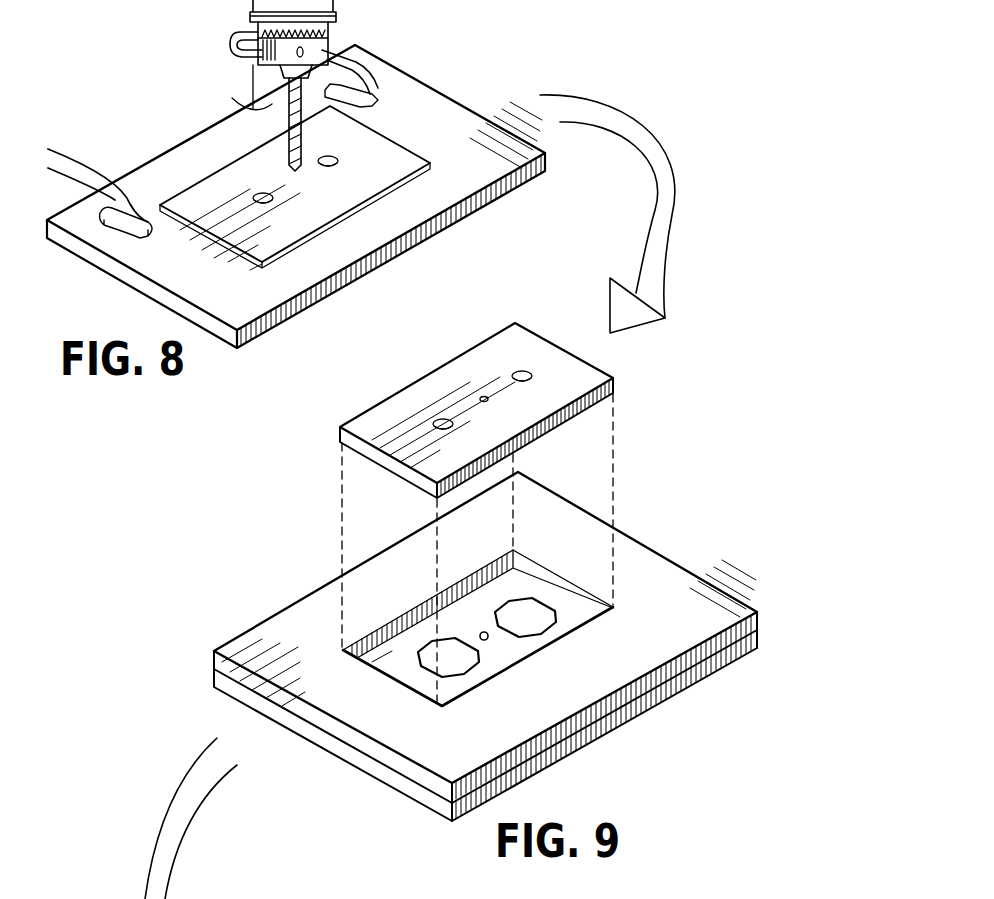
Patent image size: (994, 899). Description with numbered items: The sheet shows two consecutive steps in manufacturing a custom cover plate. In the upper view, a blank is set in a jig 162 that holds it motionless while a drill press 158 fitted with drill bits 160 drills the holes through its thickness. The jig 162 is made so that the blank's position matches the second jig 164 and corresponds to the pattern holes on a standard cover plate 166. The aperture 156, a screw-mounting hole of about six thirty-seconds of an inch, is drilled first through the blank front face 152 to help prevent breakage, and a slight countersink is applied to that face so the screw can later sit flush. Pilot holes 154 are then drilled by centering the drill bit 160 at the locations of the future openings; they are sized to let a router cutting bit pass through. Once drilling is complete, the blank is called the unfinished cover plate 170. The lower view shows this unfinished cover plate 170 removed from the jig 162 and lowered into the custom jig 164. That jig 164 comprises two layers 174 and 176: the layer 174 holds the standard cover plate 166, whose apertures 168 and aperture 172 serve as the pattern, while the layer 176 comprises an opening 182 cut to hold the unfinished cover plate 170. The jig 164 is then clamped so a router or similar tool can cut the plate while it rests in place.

In FIG. 8, the blank front face 152 is at (190, 203).
In FIG. 9, the blank front face 152 is at (530, 342).
In FIG. 8, the pilot holes 154 is at (258, 193).
In FIG. 9, the pilot holes 154 is at (522, 370).
In FIG. 9, the aperture 156 is at (482, 396).
In FIG. 8, the drill press 158 is at (250, 20).
In FIG. 8, the drill bits 160 is at (243, 103).
In FIG. 8, the jig 162 is at (125, 304).
In FIG. 9, the jig 164 is at (446, 646).
In FIG. 9, the standard cover plate 166 is at (572, 614).
In FIG. 9, the apertures 168 is at (482, 658).
In FIG. 9, the unfinished cover plate 170 is at (322, 449).
In FIG. 9, the aperture 172 is at (484, 631).
In FIG. 9, the layer 174 is at (210, 680).
In FIG. 9, the layer 176 is at (210, 651).
In FIG. 9, the opening 182 is at (387, 657).